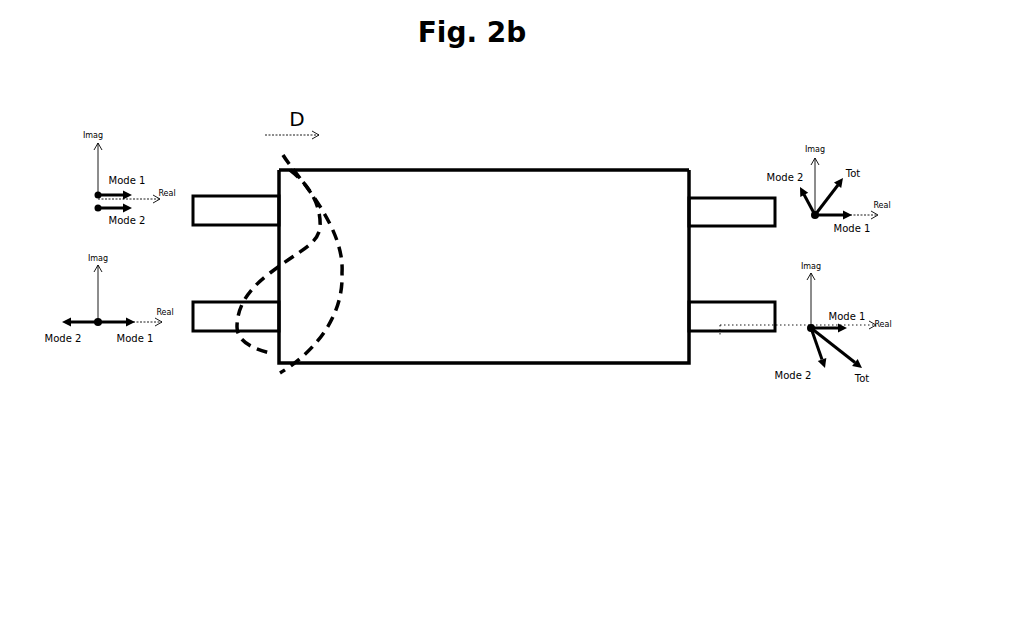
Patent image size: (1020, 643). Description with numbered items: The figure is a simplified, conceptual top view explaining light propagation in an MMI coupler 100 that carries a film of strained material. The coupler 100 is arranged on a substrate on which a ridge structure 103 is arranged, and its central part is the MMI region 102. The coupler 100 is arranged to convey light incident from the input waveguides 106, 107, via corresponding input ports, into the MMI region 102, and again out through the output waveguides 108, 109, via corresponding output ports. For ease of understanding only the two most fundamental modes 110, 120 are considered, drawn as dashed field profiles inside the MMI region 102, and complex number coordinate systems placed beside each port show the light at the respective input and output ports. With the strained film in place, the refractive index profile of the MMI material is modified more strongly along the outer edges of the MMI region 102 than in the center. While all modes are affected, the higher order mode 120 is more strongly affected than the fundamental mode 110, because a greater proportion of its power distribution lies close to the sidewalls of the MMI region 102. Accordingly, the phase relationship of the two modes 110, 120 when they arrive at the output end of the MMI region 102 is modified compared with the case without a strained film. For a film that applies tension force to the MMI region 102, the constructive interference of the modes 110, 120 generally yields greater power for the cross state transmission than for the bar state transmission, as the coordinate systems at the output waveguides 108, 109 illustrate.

The MMI coupler 100 is at (590, 393).
The MMI region 102 is at (490, 317).
The ridge structure 103 is at (552, 168).
The input waveguide 106 is at (206, 226).
The input waveguide 107 is at (206, 332).
The output waveguide 108 is at (705, 227).
The output waveguide 109 is at (737, 332).
The fundamental mode 110 is at (335, 307).
The higher order mode 120 is at (268, 353).